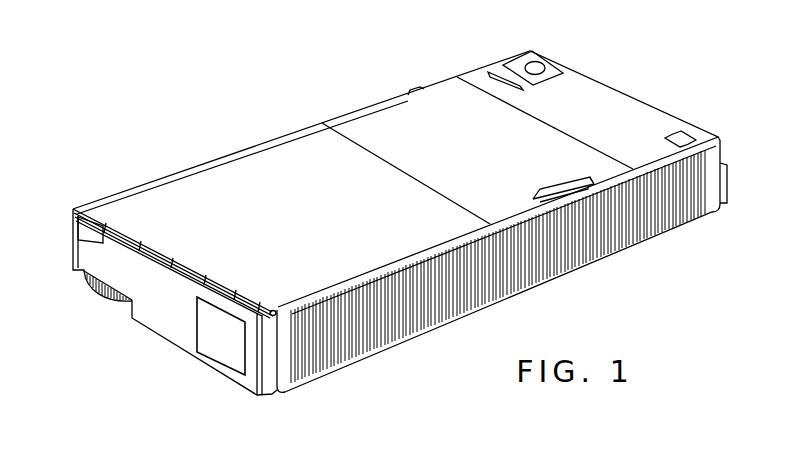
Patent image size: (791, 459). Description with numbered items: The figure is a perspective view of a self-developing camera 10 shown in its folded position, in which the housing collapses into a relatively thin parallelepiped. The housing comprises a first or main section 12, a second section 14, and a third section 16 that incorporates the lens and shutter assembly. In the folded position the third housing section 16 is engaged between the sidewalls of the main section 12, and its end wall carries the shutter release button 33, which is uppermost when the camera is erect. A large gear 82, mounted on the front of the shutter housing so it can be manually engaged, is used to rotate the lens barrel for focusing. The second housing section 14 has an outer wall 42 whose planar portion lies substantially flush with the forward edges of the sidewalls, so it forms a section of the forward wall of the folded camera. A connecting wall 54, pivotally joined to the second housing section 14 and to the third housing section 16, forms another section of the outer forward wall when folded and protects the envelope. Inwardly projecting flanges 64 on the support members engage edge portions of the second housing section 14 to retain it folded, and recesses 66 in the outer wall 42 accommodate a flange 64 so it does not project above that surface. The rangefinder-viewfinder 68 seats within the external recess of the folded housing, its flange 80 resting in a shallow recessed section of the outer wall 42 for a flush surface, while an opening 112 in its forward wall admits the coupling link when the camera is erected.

The self-developing camera 10 is at (237, 148).
The first or main housing section 12 is at (378, 357).
The second housing section 14 is at (365, 137).
The third housing section 16 is at (180, 327).
The shutter release button 33 is at (89, 213).
The outer wall 42 is at (430, 93).
The connecting wall 54 is at (302, 225).
The inwardly projecting flange 64 is at (574, 180).
The recess 66 is at (393, 103).
The rangefinder-viewfinder 68 is at (623, 110).
The flange 80 is at (477, 80).
The large gear 82 is at (88, 300).
The opening 112 is at (492, 63).